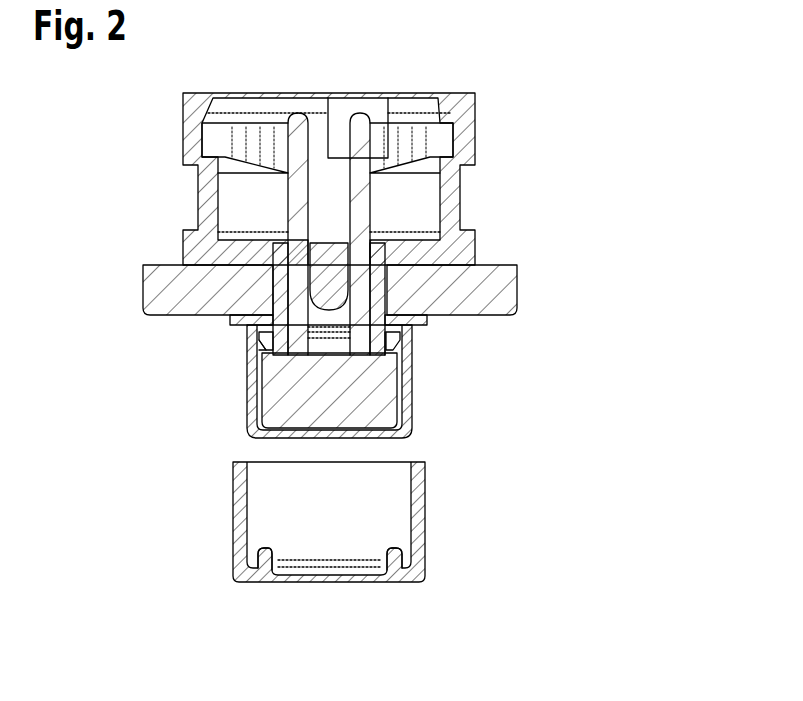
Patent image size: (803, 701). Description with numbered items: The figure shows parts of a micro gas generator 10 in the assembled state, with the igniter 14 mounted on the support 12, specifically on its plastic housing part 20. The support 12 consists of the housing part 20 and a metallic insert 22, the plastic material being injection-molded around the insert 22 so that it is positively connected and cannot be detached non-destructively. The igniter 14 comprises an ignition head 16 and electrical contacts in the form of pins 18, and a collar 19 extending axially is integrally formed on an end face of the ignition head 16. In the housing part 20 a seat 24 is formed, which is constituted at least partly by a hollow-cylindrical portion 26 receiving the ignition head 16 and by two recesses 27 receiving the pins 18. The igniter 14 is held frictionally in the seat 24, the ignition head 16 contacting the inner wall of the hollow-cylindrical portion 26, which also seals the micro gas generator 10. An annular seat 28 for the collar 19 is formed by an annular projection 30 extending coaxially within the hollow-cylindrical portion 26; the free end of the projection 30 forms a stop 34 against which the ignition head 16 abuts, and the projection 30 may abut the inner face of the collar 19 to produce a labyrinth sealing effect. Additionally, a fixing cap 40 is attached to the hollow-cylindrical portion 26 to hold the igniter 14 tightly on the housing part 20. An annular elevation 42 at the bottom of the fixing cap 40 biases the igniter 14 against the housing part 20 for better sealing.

The micro gas generator 10 is at (633, 115).
The support 12 is at (502, 135).
The igniter 14 is at (257, 466).
The ignition head 16 is at (298, 420).
The pins 18 is at (297, 213).
The collar 19 is at (245, 347).
The housing part 20 is at (212, 210).
The metallic insert 22 is at (163, 298).
The seat 24 is at (245, 388).
The hollow-cylindrical portion 26 is at (243, 413).
The recesses 27 is at (280, 260).
The annular seat 28 is at (263, 338).
The annular projection 30 is at (378, 338).
The stop 34 is at (383, 360).
The fixing cap 40 is at (425, 530).
The elevation 42 is at (262, 568).